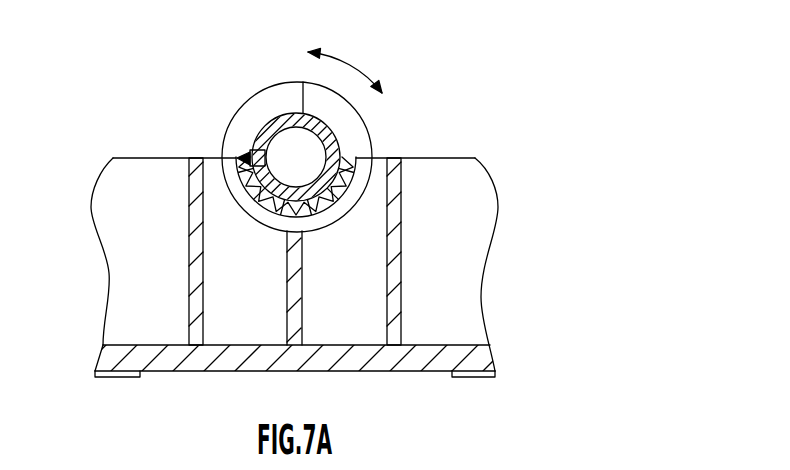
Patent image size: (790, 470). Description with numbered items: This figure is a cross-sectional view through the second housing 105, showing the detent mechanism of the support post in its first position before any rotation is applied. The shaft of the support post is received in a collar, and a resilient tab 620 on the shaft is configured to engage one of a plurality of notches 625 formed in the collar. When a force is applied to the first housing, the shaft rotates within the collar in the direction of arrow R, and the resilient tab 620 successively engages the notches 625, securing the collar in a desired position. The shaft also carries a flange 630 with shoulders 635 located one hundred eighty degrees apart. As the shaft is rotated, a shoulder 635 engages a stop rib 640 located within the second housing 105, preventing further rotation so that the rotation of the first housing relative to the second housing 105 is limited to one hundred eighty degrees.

The second housing 105 is at (92, 213).
The resilient tab 620 is at (251, 153).
The notches 625 is at (348, 183).
The flange 630 is at (355, 142).
The shoulders 635 is at (302, 82).
The stop rib 640 is at (302, 293).